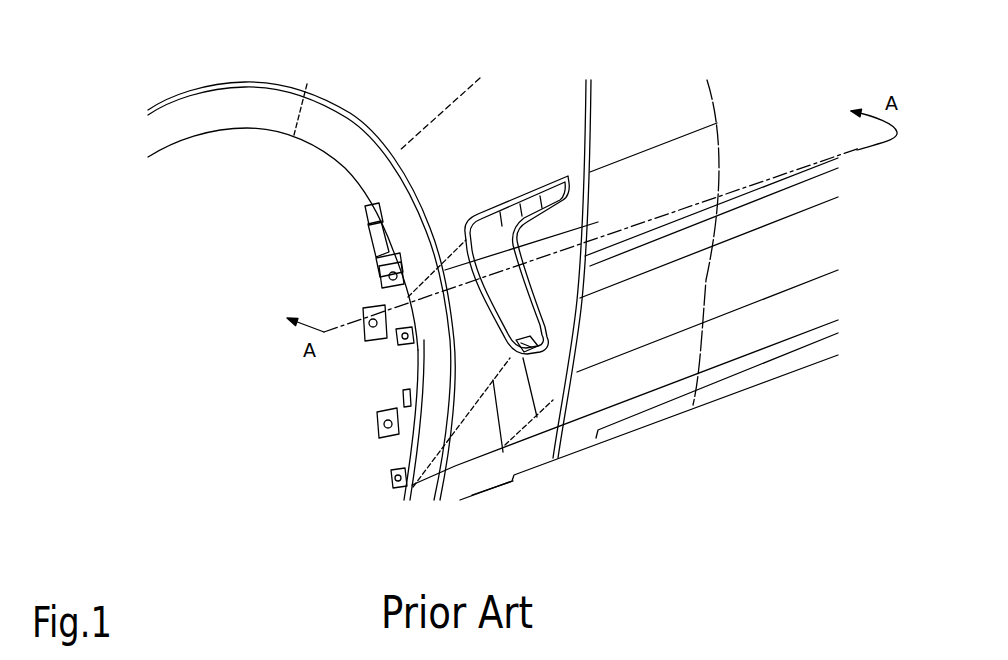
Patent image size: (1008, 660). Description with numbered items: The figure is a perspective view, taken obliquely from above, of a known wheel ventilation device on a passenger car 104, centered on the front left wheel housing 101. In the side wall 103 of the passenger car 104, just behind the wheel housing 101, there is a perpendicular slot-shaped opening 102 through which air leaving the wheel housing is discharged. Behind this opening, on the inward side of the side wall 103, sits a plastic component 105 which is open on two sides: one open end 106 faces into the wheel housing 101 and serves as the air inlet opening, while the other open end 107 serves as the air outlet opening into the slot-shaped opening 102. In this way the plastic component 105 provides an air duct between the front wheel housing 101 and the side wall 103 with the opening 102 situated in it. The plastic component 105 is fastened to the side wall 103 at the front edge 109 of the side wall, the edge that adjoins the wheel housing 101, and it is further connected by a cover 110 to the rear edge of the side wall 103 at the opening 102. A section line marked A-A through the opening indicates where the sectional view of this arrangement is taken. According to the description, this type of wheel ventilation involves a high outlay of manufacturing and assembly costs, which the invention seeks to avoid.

The front left wheel housing 101 is at (218, 197).
The slot-shaped opening 102 is at (530, 252).
The side wall 103 is at (740, 380).
The passenger car 104 is at (518, 110).
The plastic component 105 is at (398, 455).
The open end 106 is at (397, 362).
The other open end 107 is at (510, 308).
The front edge 109 is at (387, 473).
The cover 110 is at (502, 240).